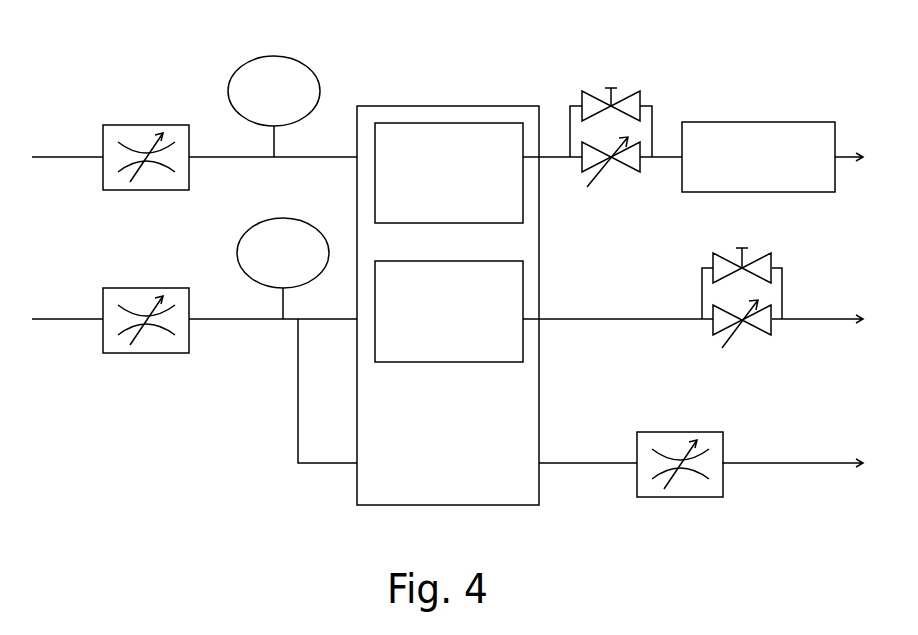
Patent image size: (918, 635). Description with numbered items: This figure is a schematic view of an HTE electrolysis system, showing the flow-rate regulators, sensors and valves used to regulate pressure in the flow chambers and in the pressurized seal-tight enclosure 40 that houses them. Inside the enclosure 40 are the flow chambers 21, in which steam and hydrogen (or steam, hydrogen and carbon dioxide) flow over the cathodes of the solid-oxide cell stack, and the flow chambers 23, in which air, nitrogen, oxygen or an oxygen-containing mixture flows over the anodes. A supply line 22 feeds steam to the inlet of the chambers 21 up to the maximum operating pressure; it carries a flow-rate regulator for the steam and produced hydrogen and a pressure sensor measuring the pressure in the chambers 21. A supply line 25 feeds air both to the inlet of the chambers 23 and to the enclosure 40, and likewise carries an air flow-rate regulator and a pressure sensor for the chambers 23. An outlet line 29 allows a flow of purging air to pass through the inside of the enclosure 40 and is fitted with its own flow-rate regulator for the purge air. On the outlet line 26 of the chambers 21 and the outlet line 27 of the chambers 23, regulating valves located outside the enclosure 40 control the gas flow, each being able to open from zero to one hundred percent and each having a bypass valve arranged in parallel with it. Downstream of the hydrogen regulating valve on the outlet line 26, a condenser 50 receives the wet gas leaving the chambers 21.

The flow chambers 21 is at (523, 202).
The supply line 22 is at (213, 157).
The flow chambers 23 is at (523, 340).
The supply line 25 is at (264, 320).
The outlet line of the chambers 21 26 is at (563, 157).
The outlet line of the chambers 23 27 is at (675, 320).
The outlet line 29 is at (793, 463).
The enclosure 40 is at (539, 492).
The condenser 50 is at (758, 122).